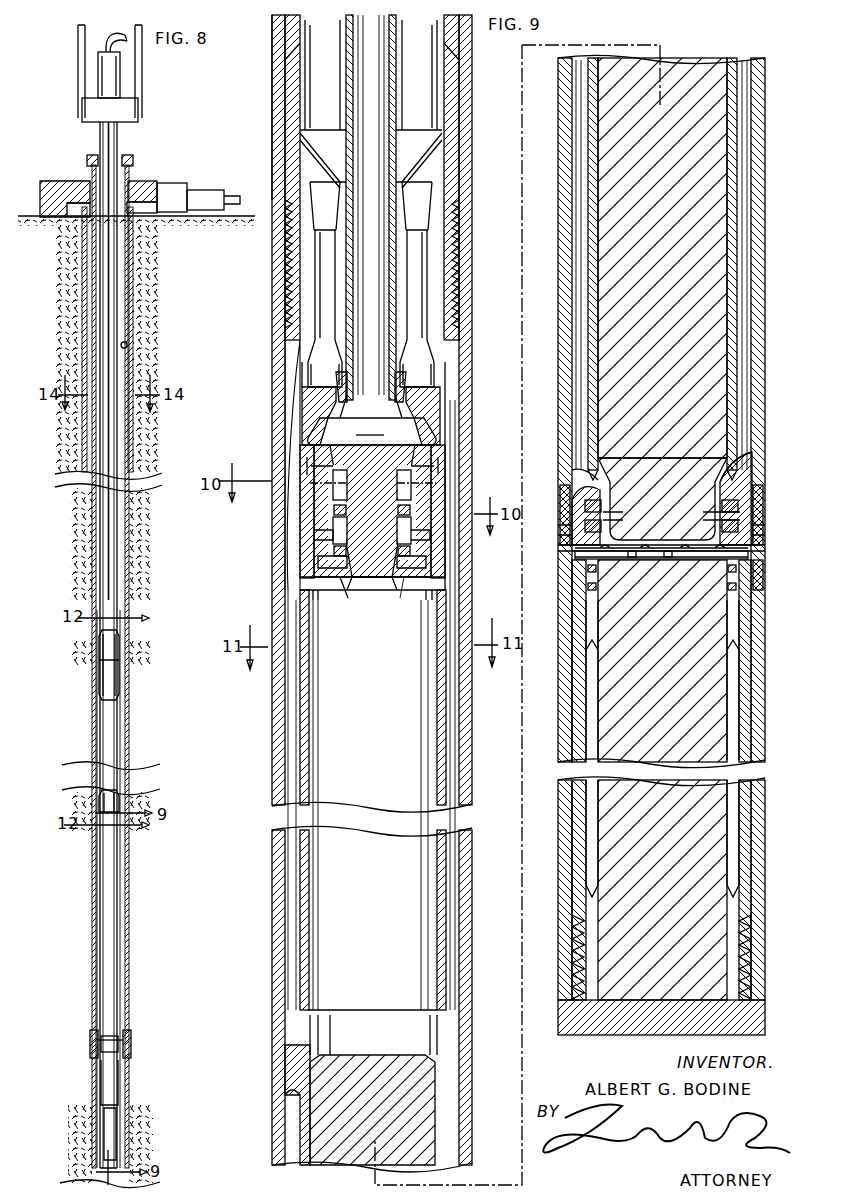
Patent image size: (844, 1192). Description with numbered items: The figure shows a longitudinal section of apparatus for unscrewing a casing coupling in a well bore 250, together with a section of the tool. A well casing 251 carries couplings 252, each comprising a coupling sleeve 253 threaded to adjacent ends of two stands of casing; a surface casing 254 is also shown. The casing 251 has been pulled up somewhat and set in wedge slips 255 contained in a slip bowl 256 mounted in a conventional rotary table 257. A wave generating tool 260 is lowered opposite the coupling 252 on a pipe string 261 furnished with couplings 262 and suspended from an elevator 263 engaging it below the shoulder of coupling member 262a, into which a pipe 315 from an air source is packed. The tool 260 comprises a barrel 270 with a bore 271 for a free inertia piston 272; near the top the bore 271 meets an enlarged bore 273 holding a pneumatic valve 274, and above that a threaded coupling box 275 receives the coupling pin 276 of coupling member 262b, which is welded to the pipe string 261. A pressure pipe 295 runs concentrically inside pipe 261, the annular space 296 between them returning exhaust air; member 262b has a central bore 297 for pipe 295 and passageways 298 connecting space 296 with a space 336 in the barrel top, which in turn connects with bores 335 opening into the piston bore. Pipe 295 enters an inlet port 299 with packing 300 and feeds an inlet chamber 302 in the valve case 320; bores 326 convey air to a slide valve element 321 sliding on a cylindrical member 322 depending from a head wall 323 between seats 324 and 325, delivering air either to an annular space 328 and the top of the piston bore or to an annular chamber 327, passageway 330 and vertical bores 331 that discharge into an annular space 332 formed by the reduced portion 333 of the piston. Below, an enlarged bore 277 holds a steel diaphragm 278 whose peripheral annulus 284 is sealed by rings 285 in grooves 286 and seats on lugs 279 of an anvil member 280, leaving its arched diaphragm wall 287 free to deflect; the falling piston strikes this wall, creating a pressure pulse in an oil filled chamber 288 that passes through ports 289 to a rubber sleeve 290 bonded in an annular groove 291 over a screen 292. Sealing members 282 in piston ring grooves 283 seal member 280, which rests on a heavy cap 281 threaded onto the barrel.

In FIG. 8, the pipe 315 is at (105, 44).
In FIG. 8, the coupling member 262a is at (112, 70).
In FIG. 8, the elevator 263 is at (126, 110).
In FIG. 8, the wedge slips 255 is at (134, 184).
In FIG. 8, the slip bowl 256 is at (141, 184).
In FIG. 8, the rotary table 257 is at (175, 196).
In FIG. 8, the surface casing 254 is at (134, 280).
In FIG. 8, the well bore 250 is at (128, 345).
In FIG. 8, the well casing 251 is at (130, 380).
In FIG. 8, the pipe string 261 is at (118, 578).
In FIG. 8, the couplings 262 is at (113, 645).
In FIG. 8, the coupling member 262b is at (122, 808).
In FIG. 9, the coupling member 262b is at (272, 134).
In FIG. 8, the wave generating tool 260 is at (120, 862).
In FIG. 9, the wave generating tool 260 is at (268, 409).
In FIG. 8, the barrel 270 is at (154, 889).
In FIG. 9, the barrel 270 is at (274, 710).
In FIG. 8, the coupling sleeve 253 is at (133, 1040).
In FIG. 8, the coupling 252 is at (133, 1050).
In FIG. 9, the pressure pipe 295 is at (397, 83).
In FIG. 9, the annular space 296 is at (432, 113).
In FIG. 9, the central bore 297 is at (392, 168).
In FIG. 9, the passageways 298 is at (420, 247).
In FIG. 9, the coupling pin 276 is at (442, 265).
In FIG. 9, the coupling box 275 is at (456, 295).
In FIG. 9, the space 336 is at (302, 378).
In FIG. 9, the inlet port 299 is at (416, 366).
In FIG. 9, the packing 300 is at (408, 388).
In FIG. 9, the enlarged bore 273 is at (447, 432).
In FIG. 9, the inlet chamber 302 is at (372, 420).
In FIG. 9, the annular chamber 327 is at (315, 455).
In FIG. 9, the head wall 323 is at (420, 465).
In FIG. 9, the passageway 330 is at (416, 487).
In FIG. 9, the bores 326 is at (326, 490).
In FIG. 9, the valve seat 324 is at (330, 518).
In FIG. 9, the valve seat 325 is at (330, 540).
In FIG. 9, the pneumatic valve 274 is at (302, 556).
In FIG. 9, the vertical bores 331 is at (455, 567).
In FIG. 9, the valve case 320 is at (303, 578).
In FIG. 9, the annular space 328 is at (313, 591).
In FIG. 9, the slide valve element 321 is at (348, 586).
In FIG. 9, the cylindrical member 322 is at (425, 585).
In FIG. 9, the bore 271 is at (304, 740).
In FIG. 9, the bores 335 is at (288, 774).
In FIG. 9, the inertia piston 272 is at (318, 1075).
In FIG. 9, the annular space 332 is at (590, 465).
In FIG. 9, the reduced lower end portion 333 is at (745, 451).
In FIG. 9, the peripheral annulus 284 is at (745, 477).
In FIG. 9, the grooves 286 is at (576, 496).
In FIG. 9, the rings 285 is at (588, 511).
In FIG. 9, the enlarged bore 277 is at (755, 495).
In FIG. 9, the rubber sleeve 290 is at (736, 519).
In FIG. 9, the screen 292 is at (756, 532).
In FIG. 9, the lugs 279 is at (590, 547).
In FIG. 9, the ports 289 is at (750, 548).
In FIG. 9, the diaphragm 278 is at (661, 570).
In FIG. 9, the oil filled chamber 288 is at (640, 558).
In FIG. 9, the diaphragm wall 287 is at (668, 556).
In FIG. 9, the anvil or inertia member 280 is at (735, 614).
In FIG. 9, the sealing members 282 is at (590, 584).
In FIG. 9, the piston ring grooves 283 is at (590, 604).
In FIG. 9, the annular groove 291 is at (754, 576).
In FIG. 9, the cap 281 is at (648, 1035).